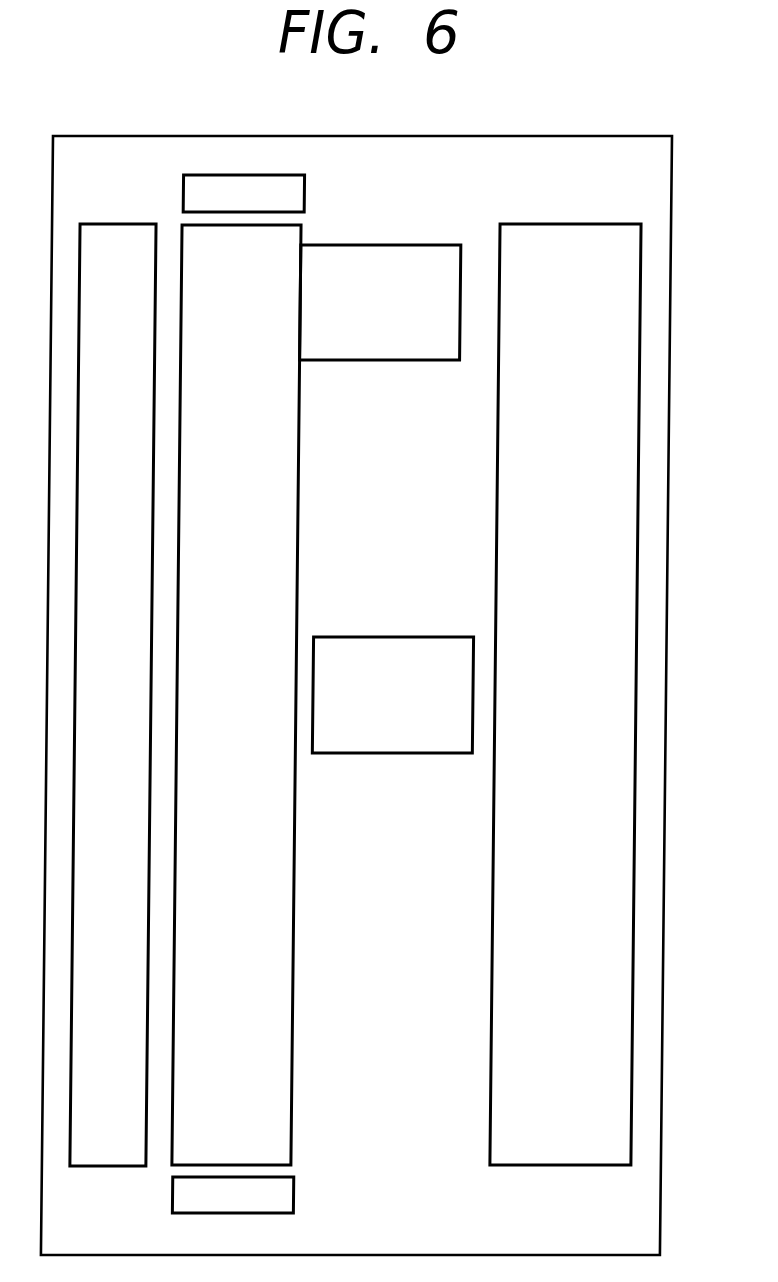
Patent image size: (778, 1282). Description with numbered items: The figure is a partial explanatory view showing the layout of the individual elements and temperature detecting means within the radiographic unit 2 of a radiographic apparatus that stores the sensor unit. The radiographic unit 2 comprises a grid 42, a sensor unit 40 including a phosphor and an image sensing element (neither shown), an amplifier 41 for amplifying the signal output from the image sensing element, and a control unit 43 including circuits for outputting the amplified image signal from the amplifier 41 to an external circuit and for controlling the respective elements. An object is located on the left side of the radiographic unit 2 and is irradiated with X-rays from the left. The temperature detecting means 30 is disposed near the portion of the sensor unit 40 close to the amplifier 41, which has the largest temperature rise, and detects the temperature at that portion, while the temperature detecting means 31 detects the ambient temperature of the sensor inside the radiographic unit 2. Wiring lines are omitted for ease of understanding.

The radiographic unit 2 is at (648, 112).
The temperature detecting means 30 is at (405, 246).
The temperature detecting means 31 is at (436, 637).
The sensor unit 40 is at (303, 231).
The amplifier 41 is at (306, 190).
The grid 42 is at (121, 221).
The control unit 43 is at (603, 224).